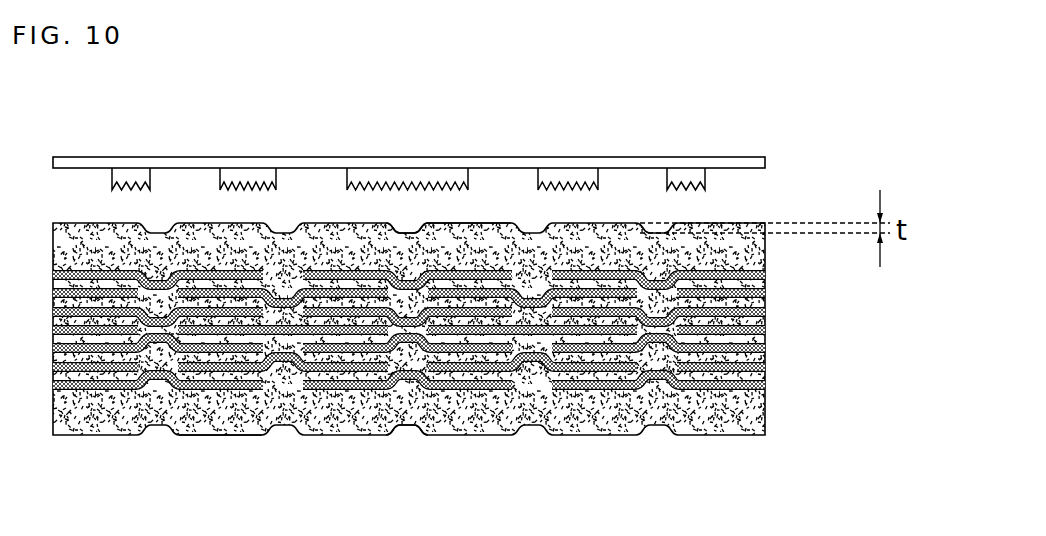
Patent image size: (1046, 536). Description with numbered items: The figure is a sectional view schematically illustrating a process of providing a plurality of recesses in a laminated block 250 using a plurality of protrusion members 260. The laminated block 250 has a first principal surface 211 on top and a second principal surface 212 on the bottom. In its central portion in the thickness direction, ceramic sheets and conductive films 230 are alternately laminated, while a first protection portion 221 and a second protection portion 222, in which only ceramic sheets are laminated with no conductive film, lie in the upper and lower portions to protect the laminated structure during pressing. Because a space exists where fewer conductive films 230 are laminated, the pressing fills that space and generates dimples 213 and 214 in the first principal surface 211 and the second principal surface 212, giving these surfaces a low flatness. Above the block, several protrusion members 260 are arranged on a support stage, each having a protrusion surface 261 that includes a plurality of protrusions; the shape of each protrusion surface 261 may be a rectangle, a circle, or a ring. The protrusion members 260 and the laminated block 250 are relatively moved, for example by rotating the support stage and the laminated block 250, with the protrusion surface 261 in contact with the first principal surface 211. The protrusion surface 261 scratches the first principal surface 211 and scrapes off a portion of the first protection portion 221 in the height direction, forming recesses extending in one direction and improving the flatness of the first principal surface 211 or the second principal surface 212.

The laminated block 250 is at (469, 279).
The conductive films 230 is at (722, 269).
The first principal surface 211 is at (445, 222).
The dimple 213 is at (407, 232).
The second principal surface 212 is at (222, 435).
The dimple 214 is at (408, 427).
The first protection portion 221 is at (703, 250).
The second protection portion 222 is at (712, 413).
The protrusion members 260 is at (125, 178).
The protrusion surface 261 is at (113, 193).